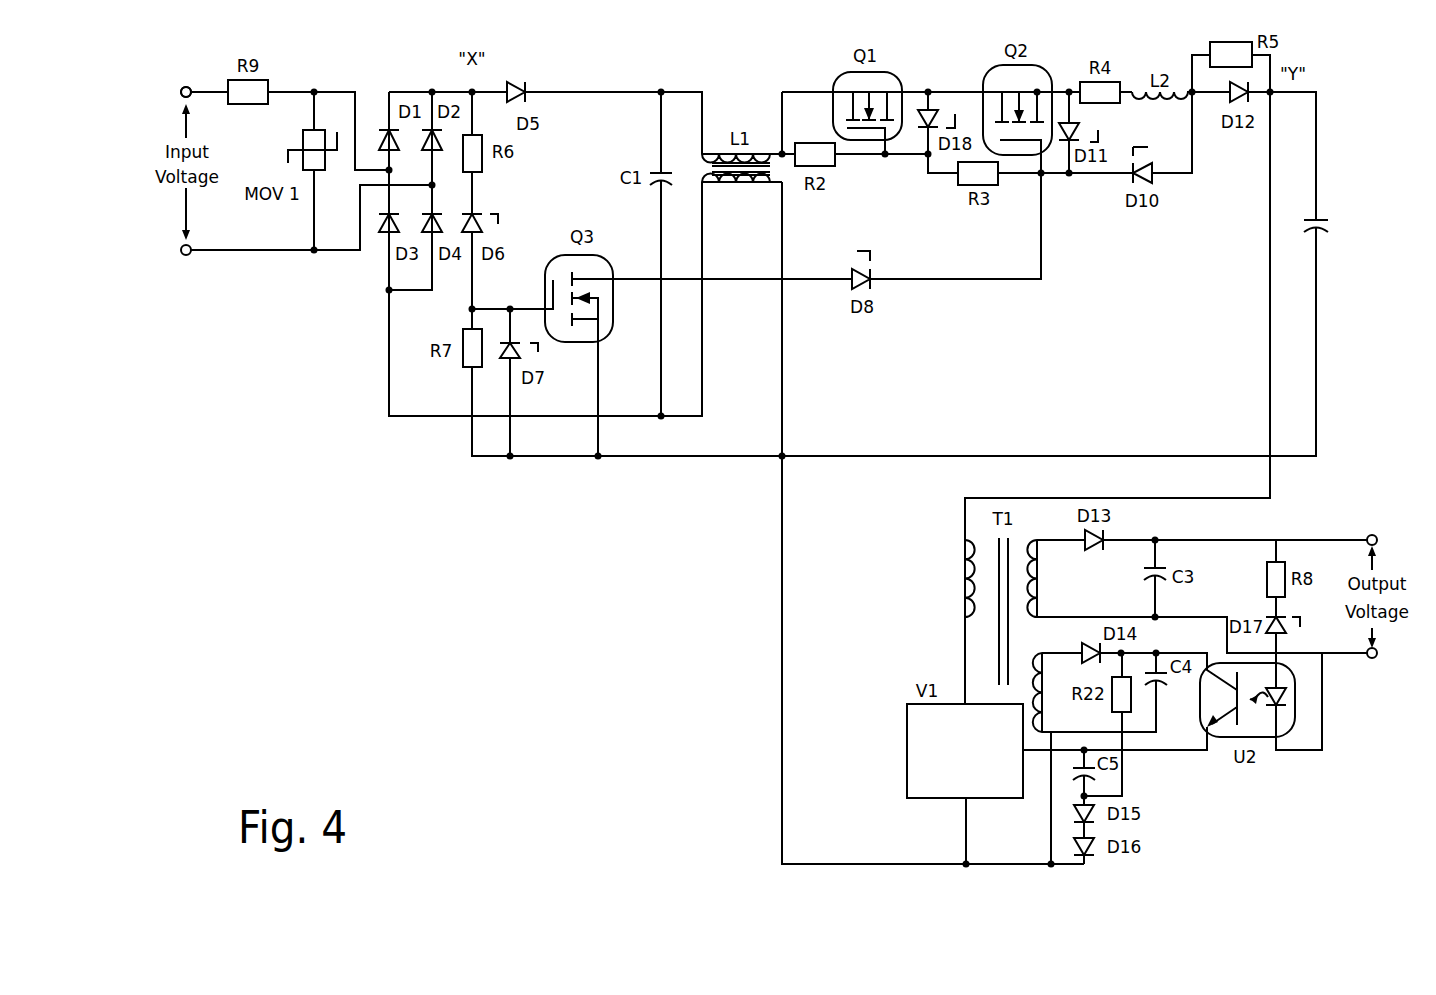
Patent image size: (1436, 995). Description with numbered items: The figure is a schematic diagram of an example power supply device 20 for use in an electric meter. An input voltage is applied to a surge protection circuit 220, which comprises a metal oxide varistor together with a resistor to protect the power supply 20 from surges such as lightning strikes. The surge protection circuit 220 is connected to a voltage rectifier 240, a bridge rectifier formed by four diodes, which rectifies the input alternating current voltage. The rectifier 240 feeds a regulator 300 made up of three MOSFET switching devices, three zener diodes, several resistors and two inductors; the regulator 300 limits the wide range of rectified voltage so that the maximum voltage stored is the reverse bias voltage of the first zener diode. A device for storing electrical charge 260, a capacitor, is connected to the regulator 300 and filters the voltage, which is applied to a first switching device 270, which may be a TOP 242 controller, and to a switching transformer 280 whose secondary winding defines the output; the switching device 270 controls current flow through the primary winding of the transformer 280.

The power supply device 20 is at (212, 75).
The surge protection circuit 220 is at (285, 84).
The voltage rectifier 240 is at (423, 83).
The regulator 300 is at (743, 100).
The device for storing electrical charge 260 is at (1333, 163).
The switching transformer 280 is at (957, 568).
The switching device 270 is at (945, 787).
The TOP 242 controller 242 is at (965, 751).